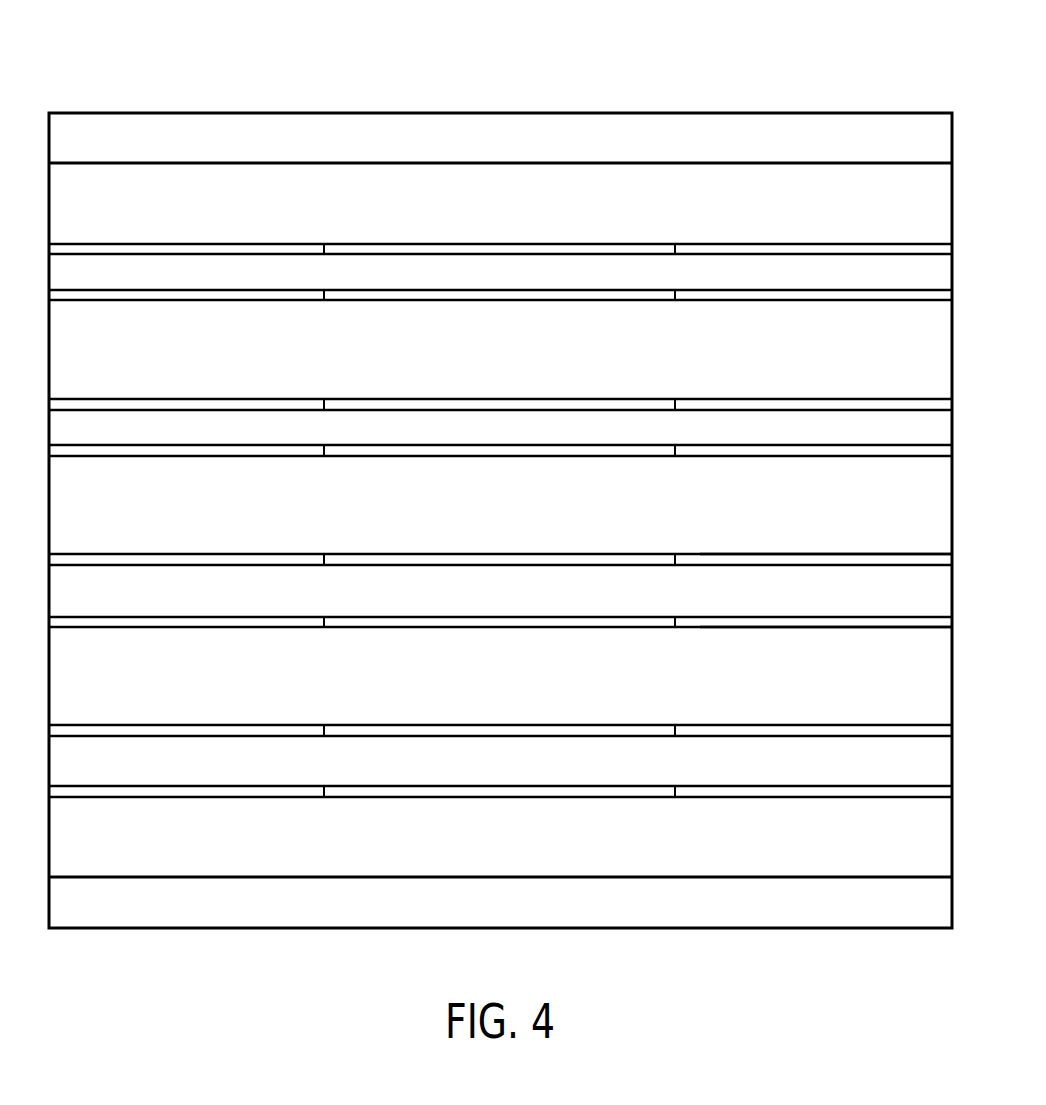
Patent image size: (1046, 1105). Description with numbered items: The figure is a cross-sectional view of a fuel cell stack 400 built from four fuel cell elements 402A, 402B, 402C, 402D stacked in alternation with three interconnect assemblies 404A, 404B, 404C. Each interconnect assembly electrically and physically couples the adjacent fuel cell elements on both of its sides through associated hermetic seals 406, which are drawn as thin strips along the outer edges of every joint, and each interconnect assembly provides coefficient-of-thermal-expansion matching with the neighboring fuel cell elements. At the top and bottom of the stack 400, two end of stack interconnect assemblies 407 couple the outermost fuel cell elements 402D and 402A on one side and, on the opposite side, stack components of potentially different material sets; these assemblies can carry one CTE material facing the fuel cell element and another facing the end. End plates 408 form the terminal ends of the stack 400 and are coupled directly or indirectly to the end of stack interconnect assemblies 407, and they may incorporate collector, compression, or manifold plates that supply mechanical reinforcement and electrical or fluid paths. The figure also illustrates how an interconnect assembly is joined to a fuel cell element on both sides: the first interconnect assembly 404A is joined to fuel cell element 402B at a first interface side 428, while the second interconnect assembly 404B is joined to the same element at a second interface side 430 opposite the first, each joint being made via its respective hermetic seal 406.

The fuel cell stack 400 is at (500, 56).
The fuel cell element 402A is at (632, 774).
The fuel cell element 402B is at (632, 604).
The fuel cell element 402C is at (632, 440).
The fuel cell element 402D is at (632, 285).
The first interconnect assembly 404A is at (667, 689).
The second interconnect assembly 404B is at (667, 518).
The interconnect assembly 404C is at (667, 362).
The hermetic seal 406 is at (225, 249).
The end of stack interconnect assembly 407 is at (737, 850).
The end plate 408 is at (575, 915).
The first interface side 428 is at (806, 635).
The second interface side 430 is at (806, 548).